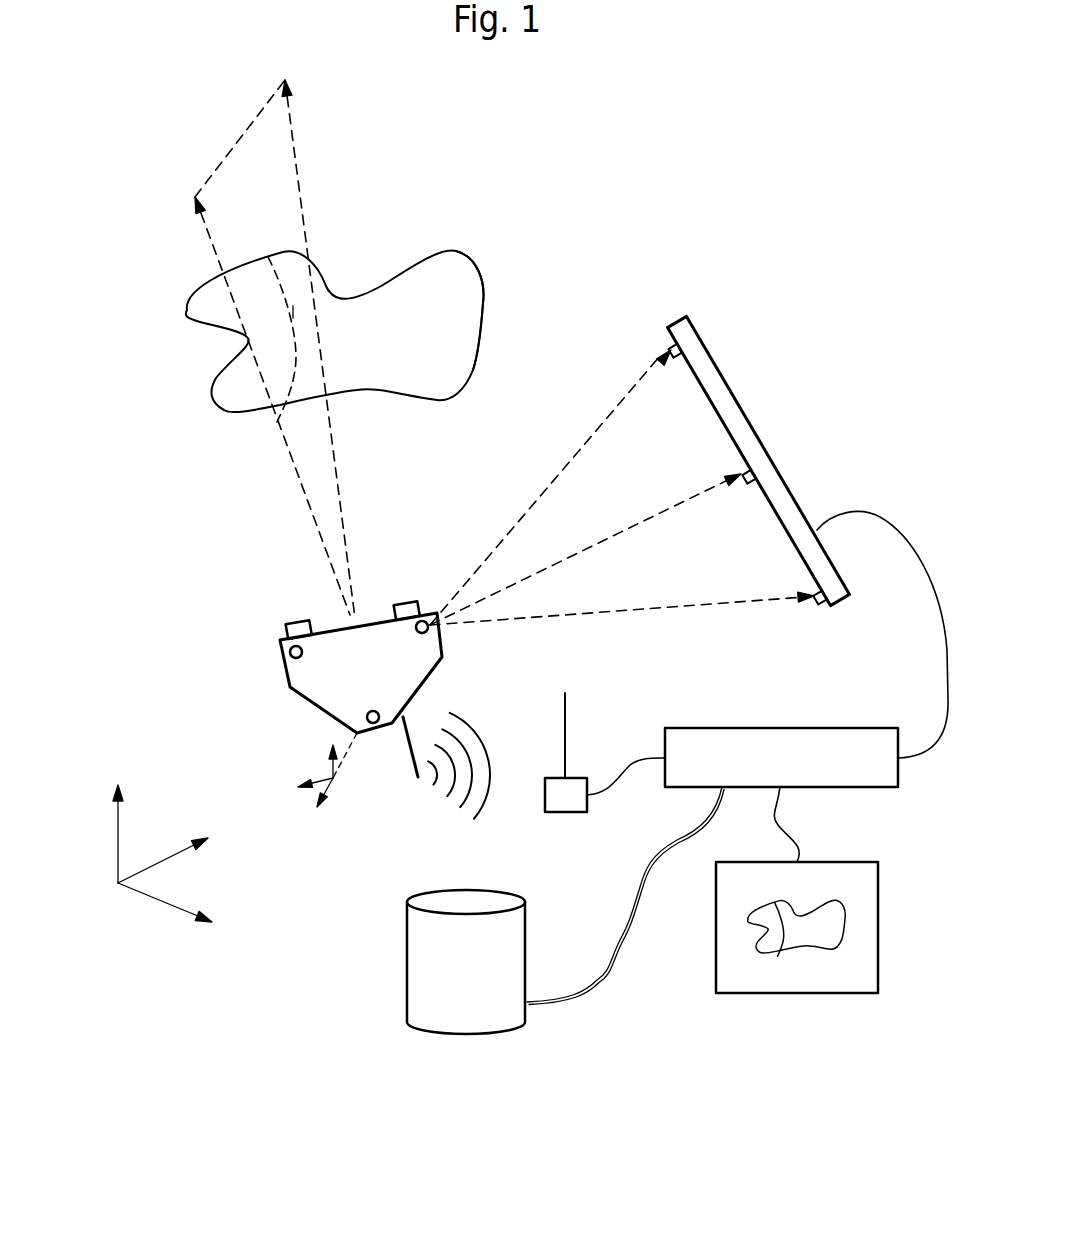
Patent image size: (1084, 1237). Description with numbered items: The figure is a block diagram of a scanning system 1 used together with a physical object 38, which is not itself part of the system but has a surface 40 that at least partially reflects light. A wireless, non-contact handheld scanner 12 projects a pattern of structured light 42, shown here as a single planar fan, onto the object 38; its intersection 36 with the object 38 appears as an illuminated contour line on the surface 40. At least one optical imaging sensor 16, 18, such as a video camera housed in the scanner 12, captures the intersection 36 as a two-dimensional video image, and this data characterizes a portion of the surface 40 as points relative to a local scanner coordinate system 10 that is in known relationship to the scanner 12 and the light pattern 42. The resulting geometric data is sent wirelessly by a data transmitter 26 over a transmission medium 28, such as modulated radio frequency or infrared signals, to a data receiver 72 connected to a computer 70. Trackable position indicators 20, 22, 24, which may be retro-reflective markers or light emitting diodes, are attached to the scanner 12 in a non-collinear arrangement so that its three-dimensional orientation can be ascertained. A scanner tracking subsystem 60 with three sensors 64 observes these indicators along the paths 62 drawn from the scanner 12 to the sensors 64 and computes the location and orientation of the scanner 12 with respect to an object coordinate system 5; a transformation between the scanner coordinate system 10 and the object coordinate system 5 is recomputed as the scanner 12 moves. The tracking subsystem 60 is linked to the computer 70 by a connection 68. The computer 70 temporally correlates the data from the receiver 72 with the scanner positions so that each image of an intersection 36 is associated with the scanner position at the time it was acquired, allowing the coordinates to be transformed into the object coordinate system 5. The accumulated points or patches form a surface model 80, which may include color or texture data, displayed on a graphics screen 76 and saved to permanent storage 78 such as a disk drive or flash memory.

The system 1 is at (265, 988).
The object coordinate system 5 is at (120, 910).
The scanner coordinate system 10 is at (358, 697).
The wireless non-contact scanner 12 is at (310, 703).
The optical imaging sensor 16 is at (290, 595).
The optical imaging sensor 18 is at (407, 602).
The trackable position indicator 20 is at (289, 652).
The trackable position indicator 22 is at (414, 632).
The trackable position indicator 24 is at (373, 709).
The data transmitter 26 is at (414, 770).
The transmission medium 28 is at (470, 722).
The intersection 36 is at (293, 312).
The physical object 38 is at (488, 245).
The surface 40 is at (483, 315).
The pattern of structured light 42 is at (298, 170).
The scanner tracking subsystem 60 is at (743, 405).
The signal paths 62 is at (555, 478).
The sensors 64 is at (668, 343).
The cable 68 is at (900, 533).
The computer 70 is at (813, 728).
The data receiver 72 is at (563, 813).
The graphics screen 76 is at (878, 890).
The permanent storage 78 is at (465, 1033).
The surface model 80 is at (840, 935).